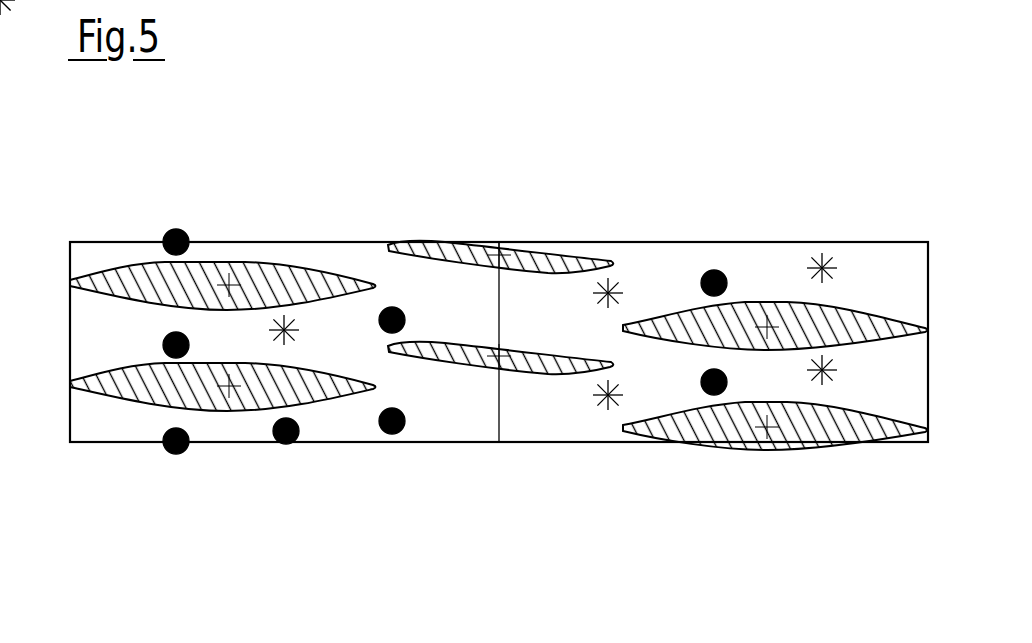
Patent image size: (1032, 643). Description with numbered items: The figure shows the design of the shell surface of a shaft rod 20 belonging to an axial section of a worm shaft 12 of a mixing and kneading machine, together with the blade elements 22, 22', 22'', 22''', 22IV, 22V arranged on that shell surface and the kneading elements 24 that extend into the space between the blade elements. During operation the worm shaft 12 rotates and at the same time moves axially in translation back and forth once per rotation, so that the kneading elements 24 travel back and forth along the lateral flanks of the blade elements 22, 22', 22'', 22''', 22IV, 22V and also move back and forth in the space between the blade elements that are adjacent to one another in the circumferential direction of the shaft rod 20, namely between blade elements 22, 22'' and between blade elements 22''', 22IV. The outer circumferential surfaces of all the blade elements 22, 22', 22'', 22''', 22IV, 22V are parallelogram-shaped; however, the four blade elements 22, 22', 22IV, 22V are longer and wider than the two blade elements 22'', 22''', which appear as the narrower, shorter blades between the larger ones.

The worm shaft 12 is at (87, 187).
The shaft rod 20 is at (663, 262).
The blade element 22 is at (223, 227).
The blade element 22' is at (223, 436).
The blade element 22'' is at (500, 208).
The blade element 22''' is at (500, 427).
The blade element 22IV is at (850, 320).
The blade element 22V is at (845, 418).
The kneading element 24 is at (175, 229).